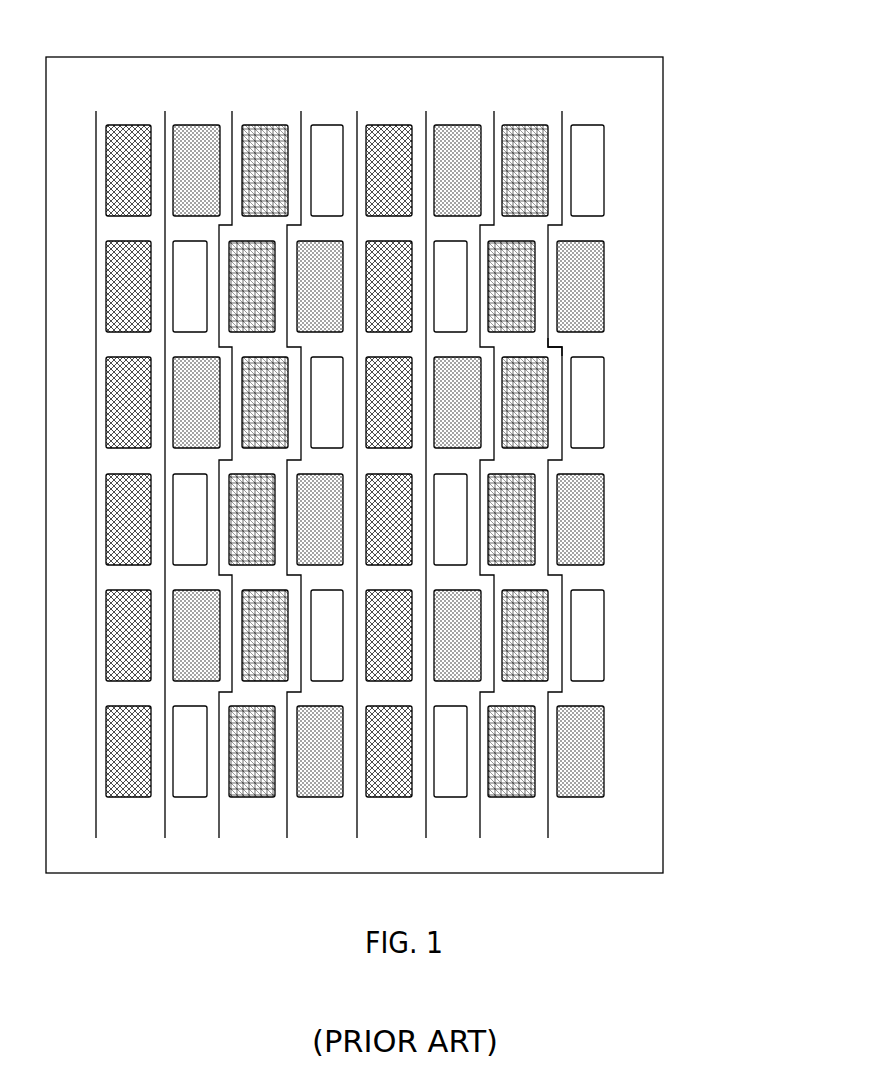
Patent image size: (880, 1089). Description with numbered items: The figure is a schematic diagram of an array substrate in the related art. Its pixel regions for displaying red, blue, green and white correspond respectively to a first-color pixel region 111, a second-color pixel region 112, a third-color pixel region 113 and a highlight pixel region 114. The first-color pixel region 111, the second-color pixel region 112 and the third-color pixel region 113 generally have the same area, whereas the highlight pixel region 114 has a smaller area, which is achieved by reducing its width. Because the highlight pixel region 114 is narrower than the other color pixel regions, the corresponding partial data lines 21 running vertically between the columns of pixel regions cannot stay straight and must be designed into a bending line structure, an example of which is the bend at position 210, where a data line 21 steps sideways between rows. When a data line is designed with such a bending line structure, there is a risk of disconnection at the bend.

The first-color pixel region 111 is at (137, 137).
The second-color pixel region 112 is at (273, 137).
The third-color pixel region 113 is at (200, 137).
The highlight pixel region 114 is at (328, 140).
The data lines 21 is at (426, 119).
The bending line structure position 210 is at (570, 345).